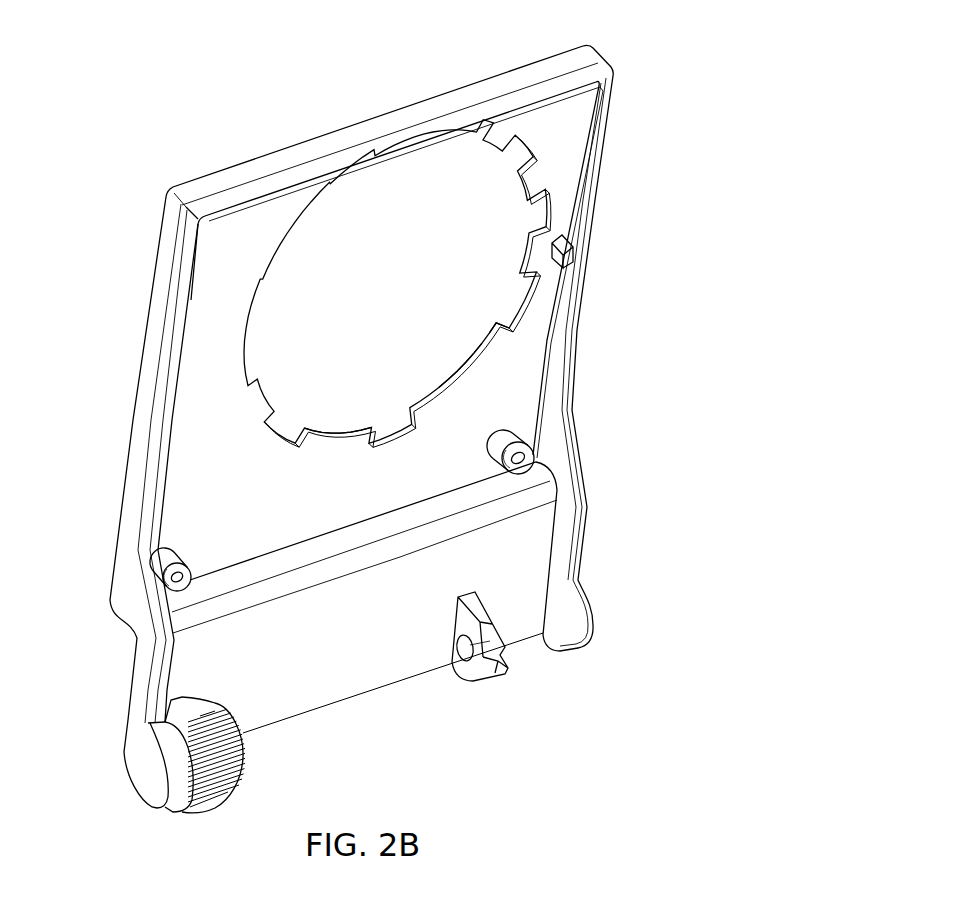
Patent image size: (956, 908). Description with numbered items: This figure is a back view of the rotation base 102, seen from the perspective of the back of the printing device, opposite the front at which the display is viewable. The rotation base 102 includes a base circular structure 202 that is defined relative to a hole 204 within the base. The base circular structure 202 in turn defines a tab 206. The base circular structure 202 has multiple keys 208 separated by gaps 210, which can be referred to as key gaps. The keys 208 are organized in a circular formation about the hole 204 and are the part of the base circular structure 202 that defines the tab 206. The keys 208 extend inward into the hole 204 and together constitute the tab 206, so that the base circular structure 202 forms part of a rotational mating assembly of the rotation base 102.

The rotation base 102 is at (187, 114).
The base circular structure 202 is at (524, 306).
The hole 204 is at (403, 304).
The tab 206 is at (338, 420).
The keys 208 is at (498, 318).
The gaps 210 is at (462, 363).